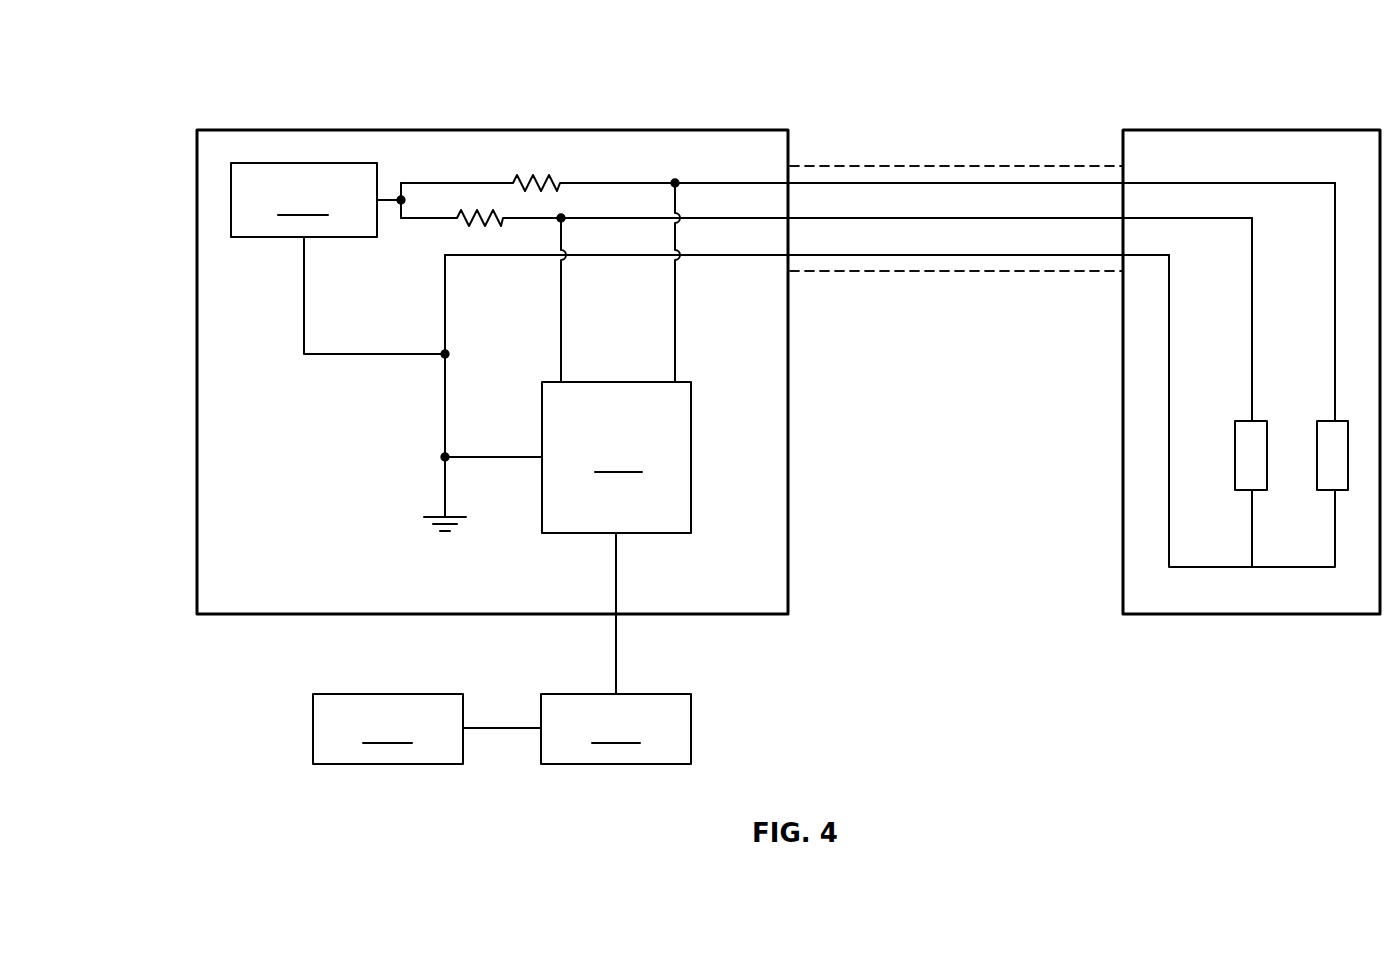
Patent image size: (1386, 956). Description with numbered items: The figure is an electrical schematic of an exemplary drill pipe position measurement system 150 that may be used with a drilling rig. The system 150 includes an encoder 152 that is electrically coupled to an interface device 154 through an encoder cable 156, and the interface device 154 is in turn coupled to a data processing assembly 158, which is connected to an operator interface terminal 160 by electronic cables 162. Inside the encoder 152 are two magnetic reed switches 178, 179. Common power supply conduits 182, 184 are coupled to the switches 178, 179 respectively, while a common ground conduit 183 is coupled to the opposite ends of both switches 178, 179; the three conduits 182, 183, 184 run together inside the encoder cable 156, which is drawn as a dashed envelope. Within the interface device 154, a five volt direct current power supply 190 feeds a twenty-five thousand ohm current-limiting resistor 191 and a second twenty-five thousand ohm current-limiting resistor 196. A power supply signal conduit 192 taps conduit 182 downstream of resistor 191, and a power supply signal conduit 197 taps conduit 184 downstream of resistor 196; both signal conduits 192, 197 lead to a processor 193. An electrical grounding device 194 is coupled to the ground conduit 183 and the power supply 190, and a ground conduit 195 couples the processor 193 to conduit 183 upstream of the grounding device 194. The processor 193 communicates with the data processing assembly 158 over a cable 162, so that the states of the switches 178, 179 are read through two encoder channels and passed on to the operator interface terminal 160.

The drill pipe position measurement system 150 is at (210, 70).
The encoder 152 is at (1306, 130).
The interface device 154 is at (717, 130).
The encoder cable 156 is at (950, 163).
The data processing assembly 158 is at (616, 729).
The operator interface terminal 160 is at (388, 729).
The electronic cables 162 is at (617, 663).
The magnetic reed switch 178 is at (1243, 420).
The magnetic reed switch 179 is at (1325, 420).
The common power supply conduit 182 is at (909, 218).
The common ground conduit 183 is at (900, 255).
The common power supply conduit 184 is at (1010, 183).
The power supply 190 is at (338, 258).
The current-limiting resistor 191 is at (480, 217).
The power supply signal conduit 192 is at (562, 325).
The processor 193 is at (616, 457).
The electrical grounding device 194 is at (436, 514).
The ground conduit 195 is at (473, 455).
The current-limiting resistor 196 is at (536, 178).
The power supply signal conduit 197 is at (677, 325).